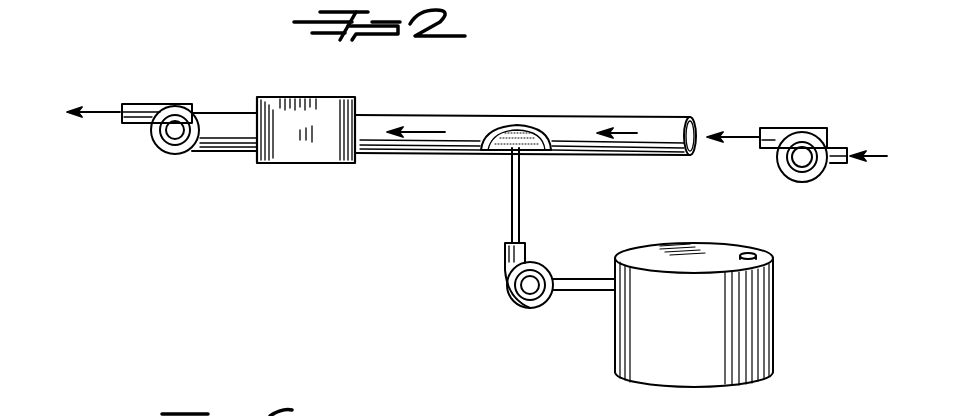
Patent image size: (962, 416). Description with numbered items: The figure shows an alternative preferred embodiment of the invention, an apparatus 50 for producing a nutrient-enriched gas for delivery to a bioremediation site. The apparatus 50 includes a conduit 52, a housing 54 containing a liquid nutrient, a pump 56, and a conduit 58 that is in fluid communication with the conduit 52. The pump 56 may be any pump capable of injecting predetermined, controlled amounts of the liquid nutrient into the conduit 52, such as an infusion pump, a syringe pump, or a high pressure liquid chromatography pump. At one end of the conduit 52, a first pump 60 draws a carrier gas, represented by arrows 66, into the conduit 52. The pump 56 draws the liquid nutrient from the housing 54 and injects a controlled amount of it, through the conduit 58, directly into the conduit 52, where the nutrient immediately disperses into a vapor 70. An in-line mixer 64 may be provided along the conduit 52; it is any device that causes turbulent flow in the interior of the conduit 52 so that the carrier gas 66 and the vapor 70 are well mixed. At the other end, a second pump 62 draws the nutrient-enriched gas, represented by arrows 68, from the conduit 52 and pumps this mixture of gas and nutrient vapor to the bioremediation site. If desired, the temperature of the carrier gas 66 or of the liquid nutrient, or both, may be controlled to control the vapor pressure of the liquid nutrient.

The apparatus 50 is at (399, 219).
The conduit 52 is at (562, 115).
The housing 54 is at (727, 387).
The pump 56 is at (528, 310).
The conduit 58 is at (511, 193).
The first pump 60 is at (790, 128).
The second pump 62 is at (167, 102).
The in-line mixer 64 is at (290, 97).
The carrier gas 66 is at (640, 107).
The nutrient-enriched gas 68 is at (115, 115).
The vapor 70 is at (521, 147).